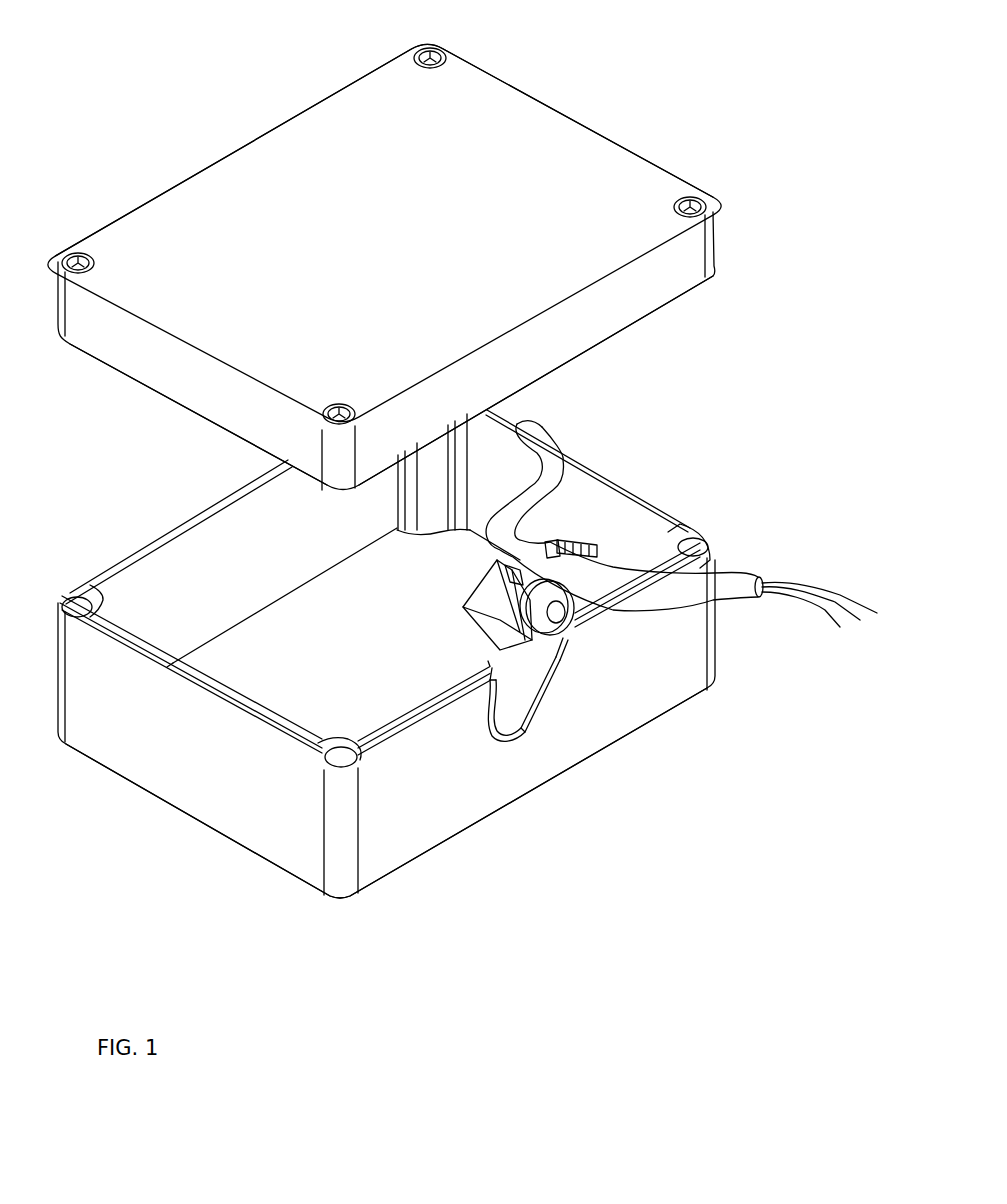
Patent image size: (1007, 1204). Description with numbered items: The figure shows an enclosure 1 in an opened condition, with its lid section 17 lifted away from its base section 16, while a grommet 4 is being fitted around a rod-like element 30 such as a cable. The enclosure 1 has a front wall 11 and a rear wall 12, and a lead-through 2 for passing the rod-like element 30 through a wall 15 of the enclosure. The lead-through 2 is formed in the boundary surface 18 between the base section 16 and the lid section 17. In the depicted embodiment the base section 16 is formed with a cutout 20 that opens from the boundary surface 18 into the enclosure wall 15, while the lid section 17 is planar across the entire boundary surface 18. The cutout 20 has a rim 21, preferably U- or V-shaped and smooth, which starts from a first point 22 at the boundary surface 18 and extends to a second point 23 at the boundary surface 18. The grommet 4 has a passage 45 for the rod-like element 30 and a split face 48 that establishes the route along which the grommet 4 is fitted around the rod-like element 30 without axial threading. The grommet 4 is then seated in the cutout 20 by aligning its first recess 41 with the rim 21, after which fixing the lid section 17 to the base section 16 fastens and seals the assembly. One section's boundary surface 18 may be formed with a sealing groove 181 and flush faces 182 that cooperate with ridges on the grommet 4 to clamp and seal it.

The enclosure 1 is at (379, 17).
The front wall 11 is at (493, 127).
The rear wall 12 is at (285, 625).
The wall 15 is at (190, 760).
The base section 16 is at (218, 833).
The lid section 17 is at (617, 146).
The boundary surface 18 is at (343, 613).
The sealing groove 181 is at (598, 344).
The flush face 182 is at (198, 414).
The lead-through 2 is at (528, 713).
The cutout 20 is at (553, 700).
The rim 21 is at (540, 730).
The first point 22 is at (487, 740).
The second point 23 is at (566, 648).
The rod-like element 30 is at (740, 580).
The grommet 4 is at (580, 550).
The first recess 41 is at (480, 622).
The passage 45 is at (568, 623).
The split face 48 is at (558, 537).